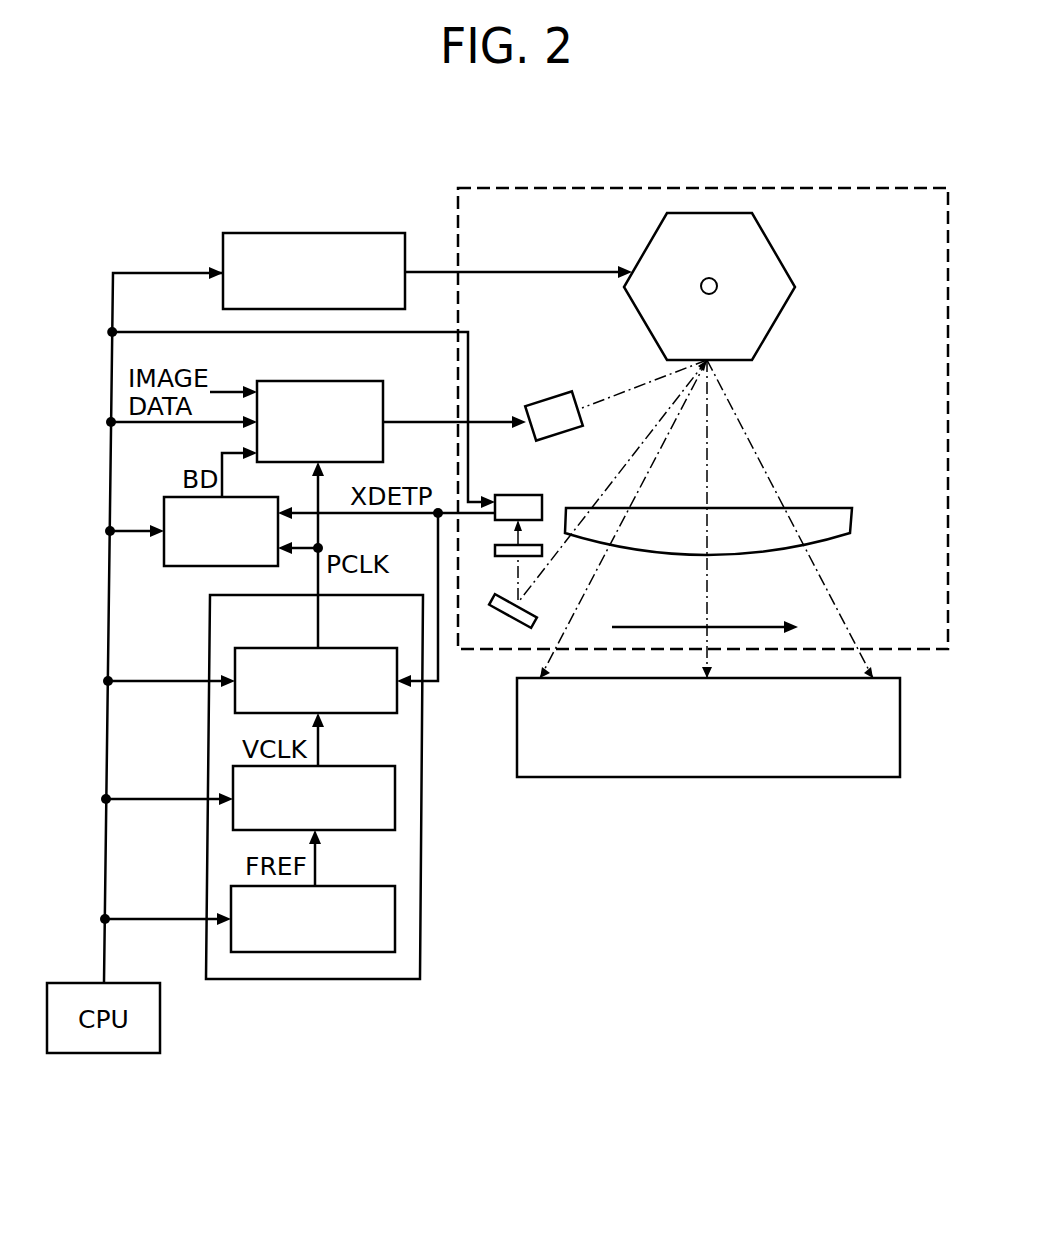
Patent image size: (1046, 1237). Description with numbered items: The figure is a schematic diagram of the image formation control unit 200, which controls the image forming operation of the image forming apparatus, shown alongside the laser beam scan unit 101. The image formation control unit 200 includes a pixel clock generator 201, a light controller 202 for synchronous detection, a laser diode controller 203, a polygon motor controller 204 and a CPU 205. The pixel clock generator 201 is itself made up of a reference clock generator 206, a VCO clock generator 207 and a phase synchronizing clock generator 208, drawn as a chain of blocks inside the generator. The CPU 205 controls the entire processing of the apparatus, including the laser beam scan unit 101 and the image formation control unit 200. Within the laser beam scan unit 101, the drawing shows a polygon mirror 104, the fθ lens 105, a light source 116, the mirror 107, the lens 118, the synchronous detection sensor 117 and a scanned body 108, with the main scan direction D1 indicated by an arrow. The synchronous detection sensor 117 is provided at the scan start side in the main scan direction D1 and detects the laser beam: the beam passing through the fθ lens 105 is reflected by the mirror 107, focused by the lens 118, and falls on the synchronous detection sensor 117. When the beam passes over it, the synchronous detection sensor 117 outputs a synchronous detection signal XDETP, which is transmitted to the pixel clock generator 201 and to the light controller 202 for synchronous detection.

The image formation control unit 200 is at (278, 168).
The pixel clock generator 201 is at (377, 980).
The light controller for synchronous detection 202 is at (175, 567).
The laser diode (LD) controller 203 is at (352, 381).
The polygon motor controller 204 is at (372, 233).
The CPU 205 is at (143, 983).
The reference clock generator 206 is at (355, 886).
The VCO clock generator 207 is at (350, 766).
The phase synchronizing clock generator 208 is at (360, 647).
The laser beam scan unit 101 is at (893, 187).
The polygon mirror 104 is at (785, 258).
The fθ lens 105 is at (815, 508).
The mirror 107 is at (492, 597).
The photoconductor 108 is at (823, 777).
The light source 116 is at (548, 395).
The synchronous detection sensor 117 is at (513, 493).
The lens 118 is at (535, 542).
The main scan direction D1 is at (633, 627).